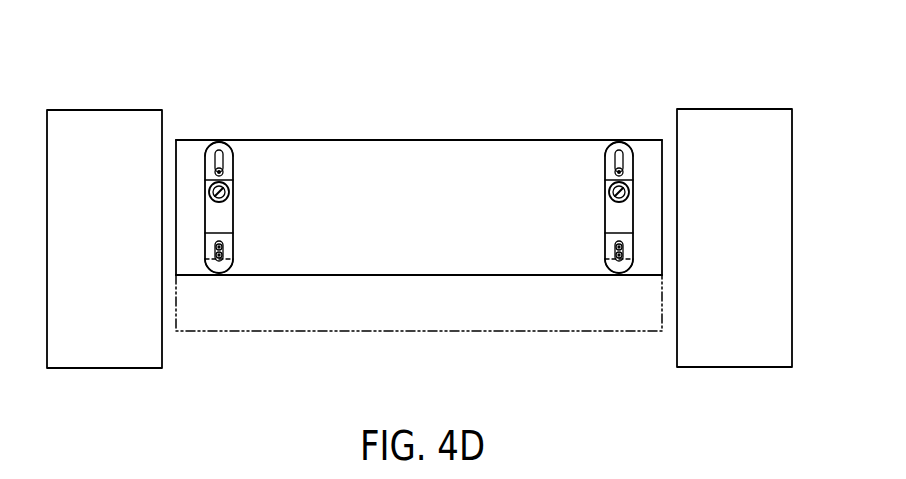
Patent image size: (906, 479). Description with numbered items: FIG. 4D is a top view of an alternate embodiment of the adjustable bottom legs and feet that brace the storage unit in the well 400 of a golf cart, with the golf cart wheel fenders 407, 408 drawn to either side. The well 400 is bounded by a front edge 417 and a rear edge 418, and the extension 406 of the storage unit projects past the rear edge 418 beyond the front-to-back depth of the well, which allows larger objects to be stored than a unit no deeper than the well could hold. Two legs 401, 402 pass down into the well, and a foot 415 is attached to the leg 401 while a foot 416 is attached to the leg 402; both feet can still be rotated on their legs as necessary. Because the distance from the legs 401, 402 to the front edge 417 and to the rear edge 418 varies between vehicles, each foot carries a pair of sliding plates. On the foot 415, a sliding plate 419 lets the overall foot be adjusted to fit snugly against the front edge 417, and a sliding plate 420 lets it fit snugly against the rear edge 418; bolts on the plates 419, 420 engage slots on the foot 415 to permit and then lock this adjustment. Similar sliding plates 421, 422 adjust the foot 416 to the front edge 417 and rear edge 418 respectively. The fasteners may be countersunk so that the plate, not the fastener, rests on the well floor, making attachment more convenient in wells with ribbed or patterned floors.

The well 400 is at (435, 126).
The leg 401 is at (230, 191).
The leg 402 is at (608, 191).
The extension 406 is at (343, 320).
The golf cart wheel fender 407 is at (105, 110).
The golf cart wheel fender 408 is at (733, 109).
The foot 415 is at (233, 210).
The foot 416 is at (605, 208).
The front edge of well 417 is at (340, 140).
The rear edge of well 418 is at (505, 275).
The sliding plate 419 is at (212, 145).
The sliding plate 420 is at (240, 272).
The sliding plate 421 is at (626, 142).
The sliding plate 422 is at (608, 272).